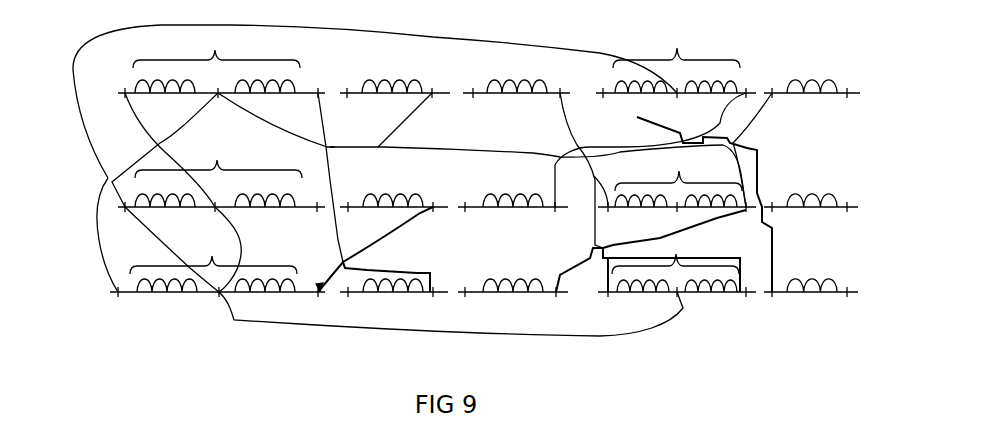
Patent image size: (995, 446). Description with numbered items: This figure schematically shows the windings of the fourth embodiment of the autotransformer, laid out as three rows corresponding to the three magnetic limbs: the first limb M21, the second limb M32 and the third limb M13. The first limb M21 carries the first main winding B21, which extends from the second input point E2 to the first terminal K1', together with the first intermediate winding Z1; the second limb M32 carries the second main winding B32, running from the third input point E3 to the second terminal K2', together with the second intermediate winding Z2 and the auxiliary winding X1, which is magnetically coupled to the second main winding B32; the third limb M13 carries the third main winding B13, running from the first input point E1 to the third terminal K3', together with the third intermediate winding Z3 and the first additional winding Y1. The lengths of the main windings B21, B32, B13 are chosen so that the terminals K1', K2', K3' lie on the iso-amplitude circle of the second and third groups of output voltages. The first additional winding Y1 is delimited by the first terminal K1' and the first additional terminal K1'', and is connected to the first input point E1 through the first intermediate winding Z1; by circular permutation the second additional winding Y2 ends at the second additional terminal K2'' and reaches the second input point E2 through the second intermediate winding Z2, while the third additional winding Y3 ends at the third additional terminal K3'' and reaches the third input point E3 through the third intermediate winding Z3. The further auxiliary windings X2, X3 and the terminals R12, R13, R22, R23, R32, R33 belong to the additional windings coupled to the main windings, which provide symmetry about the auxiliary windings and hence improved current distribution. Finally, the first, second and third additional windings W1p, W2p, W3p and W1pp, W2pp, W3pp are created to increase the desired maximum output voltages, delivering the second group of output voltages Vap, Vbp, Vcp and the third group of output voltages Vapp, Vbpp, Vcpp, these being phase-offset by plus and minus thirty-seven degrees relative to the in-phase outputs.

The first limb M21 is at (351, 101).
The second limb M32 is at (82, 235).
The third limb M13 is at (365, 311).
The first main winding B21 is at (216, 50).
The second main winding B32 is at (218, 158).
The third main winding B13 is at (213, 255).
The auxiliary winding X1 is at (678, 173).
The auxiliary winding X2 is at (675, 256).
The auxiliary winding X3 is at (676, 49).
The first intermediate winding Z1 is at (215, 98).
The second intermediate winding Z2 is at (215, 210).
The third intermediate winding Z3 is at (216, 297).
The first additional winding Y1 is at (393, 271).
The second additional winding Y2 is at (392, 69).
The third additional winding Y3 is at (393, 186).
The first additional winding W1p is at (812, 75).
The second additional winding W2p is at (812, 186).
The third additional winding W3p is at (813, 274).
The first additional winding W1pp is at (513, 274).
The second additional winding W2pp is at (517, 75).
The third additional winding W3pp is at (513, 187).
The first input point E1 is at (399, 203).
The second input point E2 is at (393, 203).
The third input point E3 is at (398, 203).
The first terminal K1' is at (366, 203).
The second terminal K2' is at (367, 162).
The third terminal K3' is at (375, 260).
The first additional terminal K1'' is at (358, 303).
The second additional terminal K2'' is at (352, 103).
The third additional terminal K3'' is at (358, 217).
The first voltage of the second group of output voltages Vap is at (855, 104).
The second voltage of the second group of output voltages Vbp is at (850, 217).
The third voltage of the second group of output voltages Vcp is at (855, 305).
The first voltage of the third group of output voltages Vapp is at (478, 303).
The second voltage of the third group of output voltages Vbpp is at (485, 104).
The third voltage of the third group of output voltages Vcpp is at (477, 217).
The terminal of the additional winding R12 is at (703, 159).
The terminal of the additional winding R13 is at (643, 259).
The terminal of the additional winding R22 is at (699, 262).
The terminal of the additional winding R23 is at (640, 205).
The terminal of the additional winding R32 is at (700, 206).
The terminal of the additional winding R33 is at (649, 160).